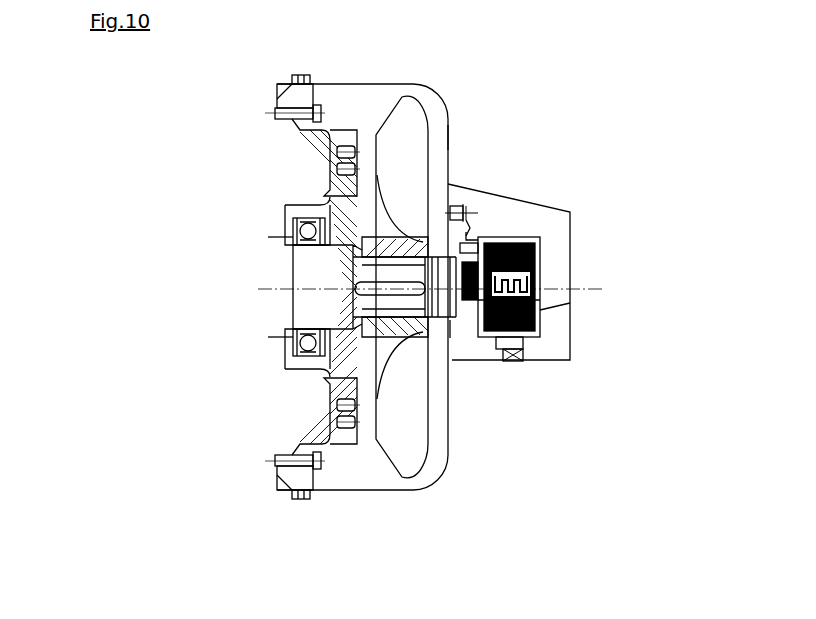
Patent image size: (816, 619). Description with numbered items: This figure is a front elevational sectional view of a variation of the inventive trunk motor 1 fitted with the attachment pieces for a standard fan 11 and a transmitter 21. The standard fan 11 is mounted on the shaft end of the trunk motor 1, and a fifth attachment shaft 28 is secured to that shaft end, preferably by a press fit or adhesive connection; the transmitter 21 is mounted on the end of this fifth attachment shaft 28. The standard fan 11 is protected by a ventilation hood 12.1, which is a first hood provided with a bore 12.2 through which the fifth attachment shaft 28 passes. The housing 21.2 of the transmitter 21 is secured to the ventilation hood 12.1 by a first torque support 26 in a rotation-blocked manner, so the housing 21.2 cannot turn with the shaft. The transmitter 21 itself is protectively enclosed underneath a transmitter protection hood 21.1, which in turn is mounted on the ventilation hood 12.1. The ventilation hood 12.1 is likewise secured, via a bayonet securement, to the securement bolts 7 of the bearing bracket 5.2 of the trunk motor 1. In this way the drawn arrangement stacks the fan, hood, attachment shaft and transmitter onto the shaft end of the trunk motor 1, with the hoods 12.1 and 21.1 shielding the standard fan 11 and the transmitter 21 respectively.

The trunk motor 1 is at (166, 283).
The bearing bracket 5.2 is at (325, 192).
The securement bolts 7 is at (308, 498).
The standard fan 11 is at (410, 437).
The ventilation hood 12.1 is at (448, 138).
The bore 12.2 is at (452, 338).
The transmitter 21 is at (540, 333).
The transmitter protection hood 21.1 is at (570, 265).
The housing 21.2 is at (540, 322).
The first torque support 26 is at (464, 227).
The fifth attachment shaft 28 is at (528, 360).